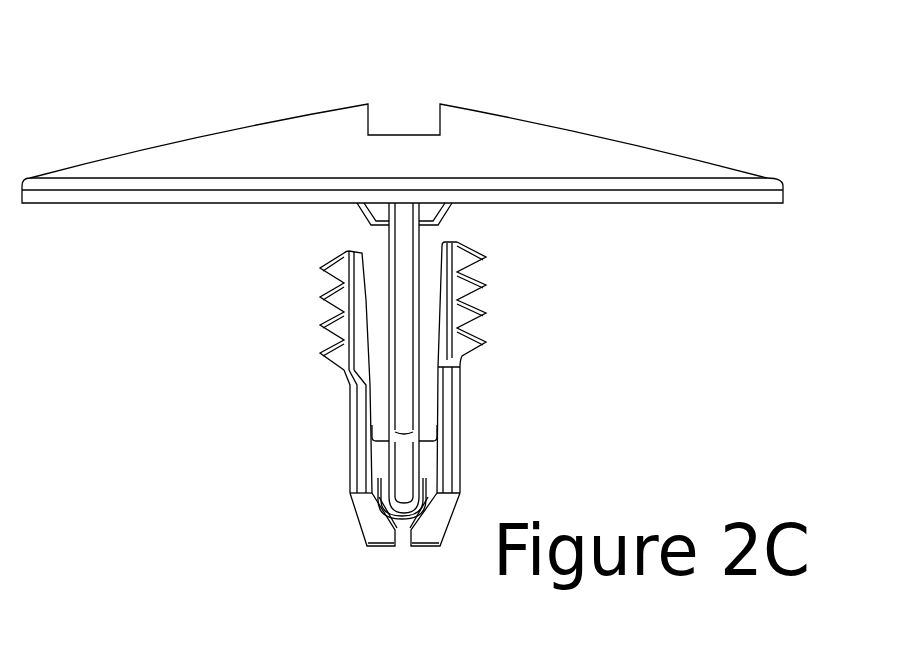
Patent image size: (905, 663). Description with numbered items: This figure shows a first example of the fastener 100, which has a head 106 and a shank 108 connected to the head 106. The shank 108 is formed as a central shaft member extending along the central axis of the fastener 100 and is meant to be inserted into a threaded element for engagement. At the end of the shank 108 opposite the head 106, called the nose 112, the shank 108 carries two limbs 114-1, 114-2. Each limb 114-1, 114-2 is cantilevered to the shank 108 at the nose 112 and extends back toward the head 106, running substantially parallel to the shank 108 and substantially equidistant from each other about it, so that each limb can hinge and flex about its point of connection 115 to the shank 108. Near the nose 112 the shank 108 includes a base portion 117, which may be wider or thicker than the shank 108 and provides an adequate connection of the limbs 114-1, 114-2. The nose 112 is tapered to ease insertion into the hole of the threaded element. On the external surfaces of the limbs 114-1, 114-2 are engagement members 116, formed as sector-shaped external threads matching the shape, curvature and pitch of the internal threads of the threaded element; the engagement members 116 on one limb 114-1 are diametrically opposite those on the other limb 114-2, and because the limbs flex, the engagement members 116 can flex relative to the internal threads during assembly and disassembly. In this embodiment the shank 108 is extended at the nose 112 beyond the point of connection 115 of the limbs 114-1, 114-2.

The fastener 100 is at (482, 97).
The head 106 is at (235, 160).
The shank 108 is at (402, 318).
The nose 112 is at (393, 553).
The limb 114-1 is at (349, 431).
The limb 114-2 is at (440, 431).
The point of connection 115 is at (380, 467).
The engagement members 116 is at (330, 283).
The base portion 117 is at (430, 458).